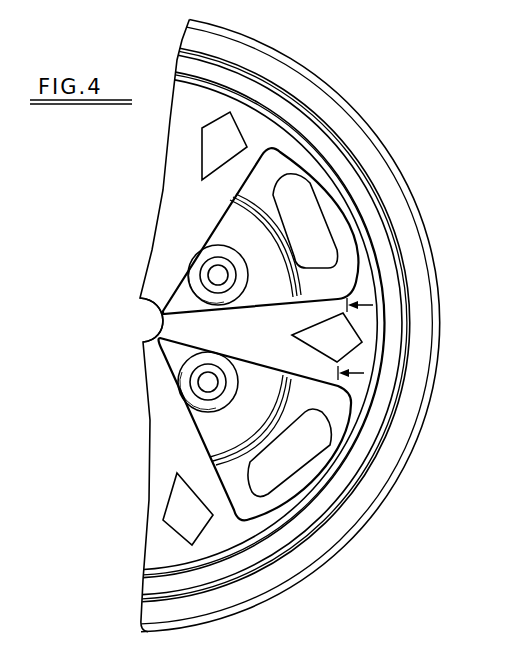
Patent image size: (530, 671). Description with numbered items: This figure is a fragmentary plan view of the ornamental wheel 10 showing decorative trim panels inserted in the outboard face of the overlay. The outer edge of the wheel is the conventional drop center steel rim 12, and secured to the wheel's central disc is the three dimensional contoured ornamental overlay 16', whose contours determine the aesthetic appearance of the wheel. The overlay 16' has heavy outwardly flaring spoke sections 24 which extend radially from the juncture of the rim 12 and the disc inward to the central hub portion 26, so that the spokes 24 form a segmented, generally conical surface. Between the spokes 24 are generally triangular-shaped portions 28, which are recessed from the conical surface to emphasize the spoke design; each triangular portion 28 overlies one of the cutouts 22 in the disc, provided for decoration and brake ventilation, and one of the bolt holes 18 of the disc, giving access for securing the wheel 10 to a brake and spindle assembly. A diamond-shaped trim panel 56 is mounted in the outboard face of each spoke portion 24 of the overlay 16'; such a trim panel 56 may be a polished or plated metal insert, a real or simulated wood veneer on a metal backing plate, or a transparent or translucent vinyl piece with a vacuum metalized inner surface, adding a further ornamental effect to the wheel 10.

The ornamental wheel 10 is at (435, 228).
The drop center steel rim 12 is at (383, 174).
The ornamental overlay 16' is at (307, 324).
The bolt holes 18 is at (275, 328).
The cutouts 22 is at (268, 470).
The spoke sections 24 is at (210, 490).
The central hub portion 26 is at (158, 343).
The triangular-shaped portions 28 is at (338, 270).
The trim panel 56 is at (224, 133).